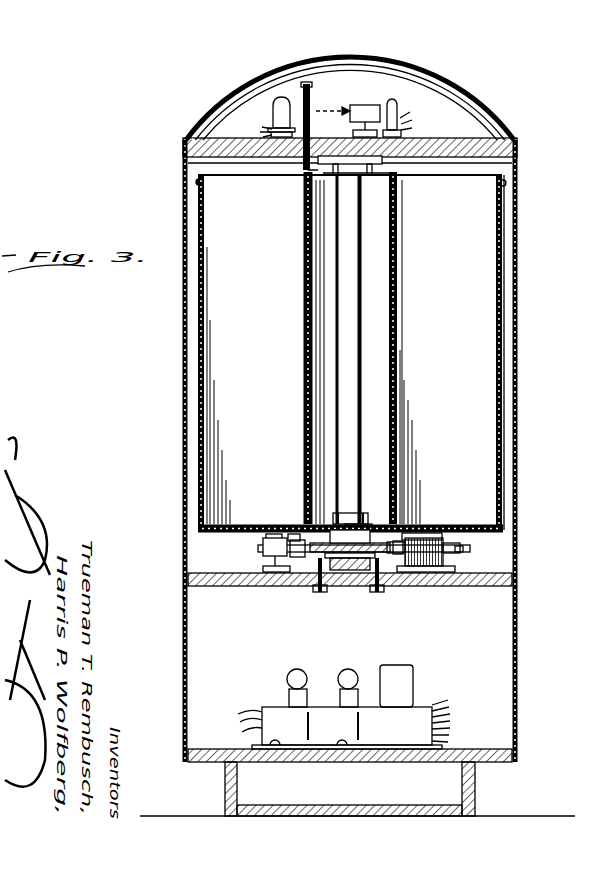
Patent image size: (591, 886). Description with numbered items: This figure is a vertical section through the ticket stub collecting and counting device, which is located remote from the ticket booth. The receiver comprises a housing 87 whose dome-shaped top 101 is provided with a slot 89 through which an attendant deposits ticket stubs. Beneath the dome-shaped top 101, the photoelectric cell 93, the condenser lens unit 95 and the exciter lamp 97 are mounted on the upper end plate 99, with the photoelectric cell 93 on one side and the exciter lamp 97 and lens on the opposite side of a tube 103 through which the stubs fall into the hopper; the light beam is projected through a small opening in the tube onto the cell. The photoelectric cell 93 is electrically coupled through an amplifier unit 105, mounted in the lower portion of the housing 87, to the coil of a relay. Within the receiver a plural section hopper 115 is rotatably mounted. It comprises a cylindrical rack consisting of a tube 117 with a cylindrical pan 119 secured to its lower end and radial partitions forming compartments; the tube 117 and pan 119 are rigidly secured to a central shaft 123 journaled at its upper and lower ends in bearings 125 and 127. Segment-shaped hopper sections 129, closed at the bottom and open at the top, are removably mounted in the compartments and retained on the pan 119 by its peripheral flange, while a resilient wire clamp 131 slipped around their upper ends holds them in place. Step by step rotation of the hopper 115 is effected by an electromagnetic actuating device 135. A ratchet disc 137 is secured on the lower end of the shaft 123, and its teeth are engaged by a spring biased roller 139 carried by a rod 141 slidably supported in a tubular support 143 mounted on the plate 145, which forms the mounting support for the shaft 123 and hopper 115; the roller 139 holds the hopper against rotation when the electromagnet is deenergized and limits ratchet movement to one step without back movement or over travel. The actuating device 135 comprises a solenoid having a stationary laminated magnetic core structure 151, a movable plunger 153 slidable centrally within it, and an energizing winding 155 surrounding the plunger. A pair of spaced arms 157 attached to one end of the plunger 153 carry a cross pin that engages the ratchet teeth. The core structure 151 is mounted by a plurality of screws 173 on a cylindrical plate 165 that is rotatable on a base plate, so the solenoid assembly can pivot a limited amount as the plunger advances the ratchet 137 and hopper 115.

The housing 87 is at (182, 353).
The slot 89 is at (310, 90).
The photoelectric cell 93 is at (272, 112).
The condenser lens unit 95 is at (386, 80).
The exciter lamp 97 is at (410, 102).
The upper end plate 99 is at (485, 138).
The dome-shaped top 101 is at (467, 130).
The tube 103 is at (297, 110).
The amplifier unit 105 is at (272, 712).
The hopper 115 is at (203, 443).
The tube 117 is at (398, 494).
The cylindrical pan 119 is at (503, 533).
The central shaft 123 is at (362, 363).
The bearing 125 is at (385, 172).
The bearing 127 is at (334, 592).
The hopper sections 129 is at (503, 315).
The wire clamp 131 is at (506, 182).
The electromagnetic actuating device 135 is at (492, 565).
The ratchet disc 137 is at (297, 587).
The roller 139 is at (290, 527).
The rod 141 is at (263, 548).
The tubular support 143 is at (272, 533).
The plate 145 is at (480, 587).
The magnetic core structure 151 is at (447, 520).
The plunger 153 is at (452, 540).
The energizing winding 155 is at (420, 522).
The arms 157 is at (380, 528).
The cylindrical plate 165 is at (430, 587).
The screws 173 is at (397, 587).